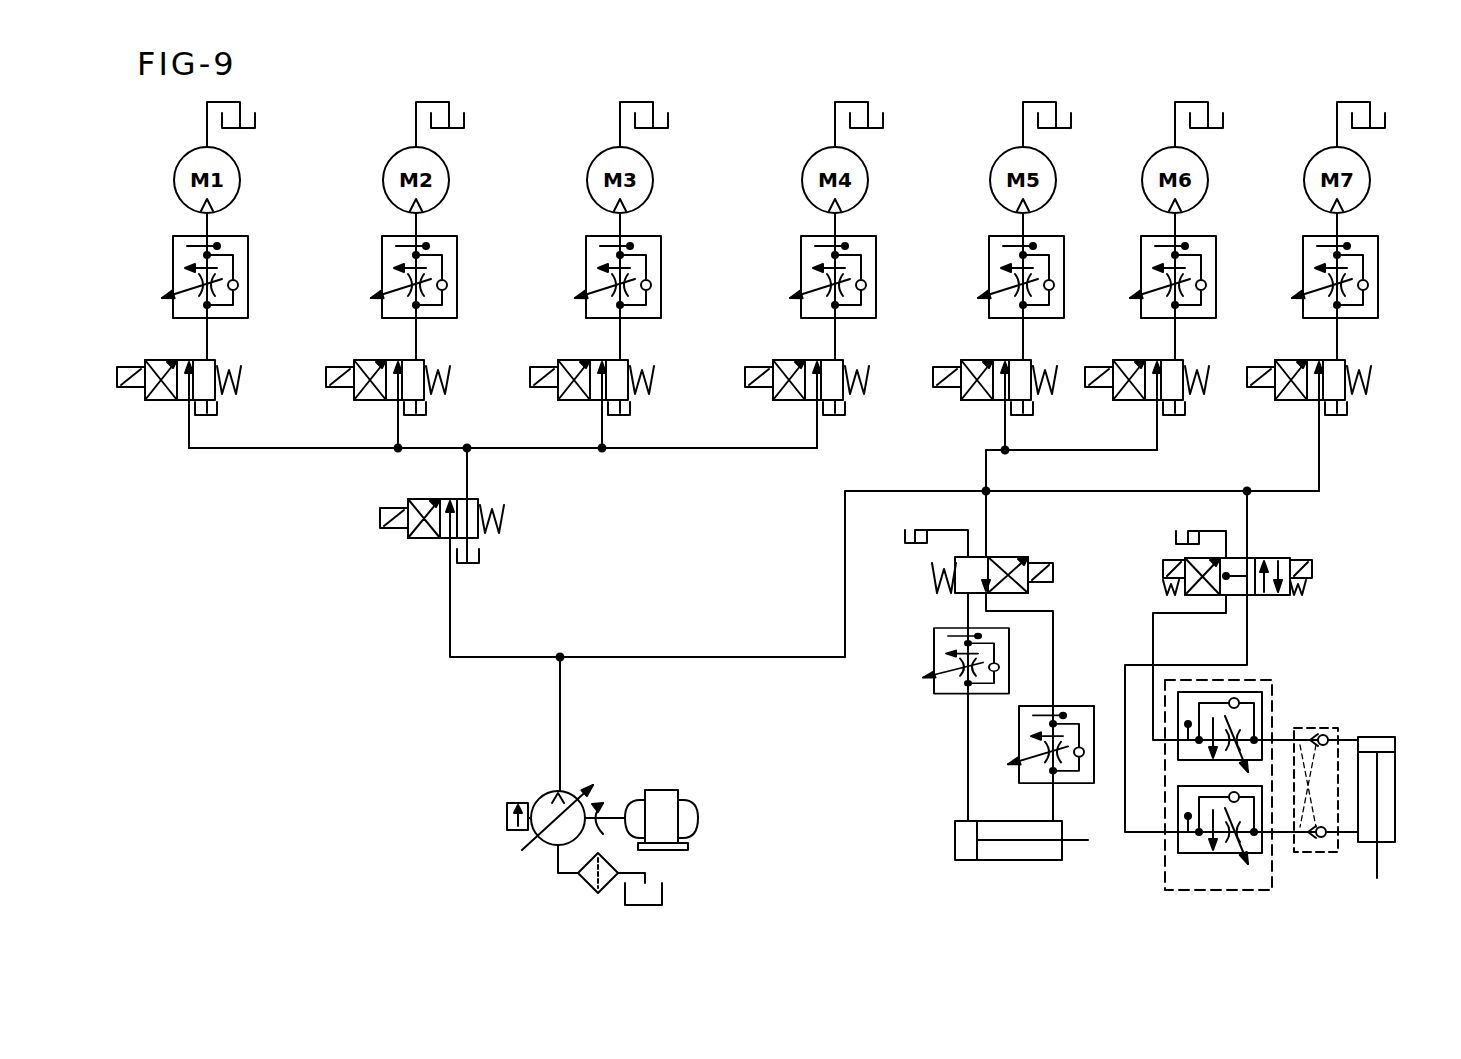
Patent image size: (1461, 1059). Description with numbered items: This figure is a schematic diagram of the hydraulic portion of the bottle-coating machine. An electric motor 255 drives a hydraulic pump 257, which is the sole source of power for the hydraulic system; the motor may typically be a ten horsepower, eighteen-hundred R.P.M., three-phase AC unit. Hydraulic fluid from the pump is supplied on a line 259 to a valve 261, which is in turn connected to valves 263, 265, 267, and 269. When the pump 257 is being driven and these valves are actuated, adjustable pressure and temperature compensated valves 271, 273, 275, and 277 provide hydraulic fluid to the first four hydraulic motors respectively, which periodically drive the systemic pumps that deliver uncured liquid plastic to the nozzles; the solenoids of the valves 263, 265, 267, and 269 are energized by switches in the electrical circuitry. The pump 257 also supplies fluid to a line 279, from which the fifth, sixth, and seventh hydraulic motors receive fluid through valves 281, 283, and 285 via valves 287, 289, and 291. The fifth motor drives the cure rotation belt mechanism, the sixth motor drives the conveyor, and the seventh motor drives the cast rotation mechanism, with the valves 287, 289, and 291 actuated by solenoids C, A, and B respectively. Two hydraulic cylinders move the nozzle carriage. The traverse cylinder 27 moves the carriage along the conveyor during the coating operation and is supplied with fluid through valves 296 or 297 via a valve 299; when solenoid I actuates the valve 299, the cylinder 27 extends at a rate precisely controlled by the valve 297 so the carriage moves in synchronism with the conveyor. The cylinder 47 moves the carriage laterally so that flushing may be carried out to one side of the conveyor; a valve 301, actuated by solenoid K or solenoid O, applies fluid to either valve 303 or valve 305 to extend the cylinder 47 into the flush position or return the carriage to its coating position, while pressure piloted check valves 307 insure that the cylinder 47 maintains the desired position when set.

The hydraulic cylinder 27 is at (960, 862).
The hydraulic cylinder 47 is at (1395, 778).
The electric motor 255 is at (665, 793).
The hydraulic pump 257 is at (548, 800).
The line 259 is at (451, 596).
The valve 261 is at (479, 506).
The valve 263 is at (186, 393).
The valve 265 is at (395, 393).
The valve 267 is at (598, 393).
The valve 269 is at (813, 393).
The adjustable pressure and temperature compensated valve 271 is at (234, 277).
The adjustable pressure and temperature compensated valve 273 is at (443, 277).
The adjustable pressure and temperature compensated valve 275 is at (647, 277).
The adjustable pressure and temperature compensated valve 277 is at (862, 277).
The line 279 is at (845, 555).
The valve 281 is at (1050, 277).
The valve 283 is at (1202, 277).
The valve 285 is at (1364, 277).
The valve 287 is at (982, 405).
The valve 289 is at (1134, 405).
The valve 291 is at (1296, 425).
The valve 296 is at (950, 693).
The valve 297 is at (1090, 708).
The valve 299 is at (1030, 590).
The valve 301 is at (1283, 560).
The valve 303 is at (1252, 690).
The valve 305 is at (1202, 853).
The pressure piloted check valves 307 is at (1310, 728).